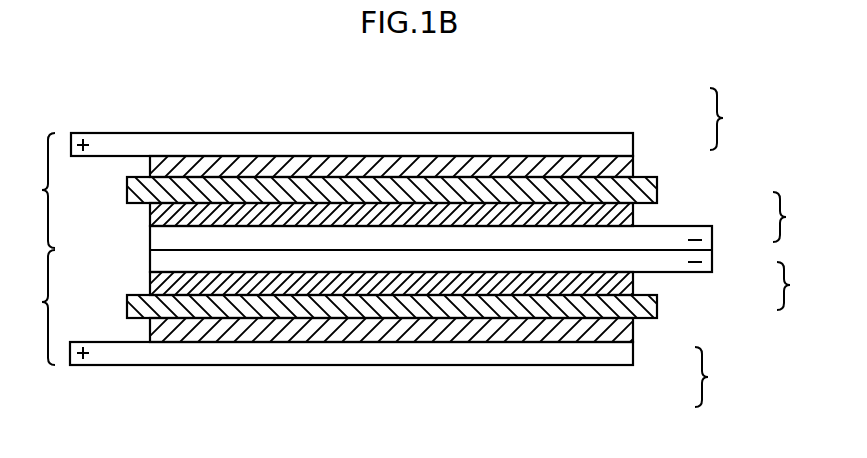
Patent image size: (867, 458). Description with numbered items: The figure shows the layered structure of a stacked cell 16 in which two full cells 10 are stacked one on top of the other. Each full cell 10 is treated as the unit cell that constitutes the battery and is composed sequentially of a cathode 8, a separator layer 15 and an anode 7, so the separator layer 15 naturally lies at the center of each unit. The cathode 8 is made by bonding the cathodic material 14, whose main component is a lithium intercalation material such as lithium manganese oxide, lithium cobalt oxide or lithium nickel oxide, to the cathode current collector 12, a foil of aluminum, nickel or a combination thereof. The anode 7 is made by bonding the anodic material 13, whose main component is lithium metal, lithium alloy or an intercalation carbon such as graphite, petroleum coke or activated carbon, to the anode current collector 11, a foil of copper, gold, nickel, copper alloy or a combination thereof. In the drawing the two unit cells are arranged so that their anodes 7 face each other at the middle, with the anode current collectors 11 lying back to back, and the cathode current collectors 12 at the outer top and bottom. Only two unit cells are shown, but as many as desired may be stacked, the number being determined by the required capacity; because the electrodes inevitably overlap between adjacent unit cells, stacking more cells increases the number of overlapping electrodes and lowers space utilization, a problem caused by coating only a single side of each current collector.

The anode 7 is at (789, 251).
The cathode 8 is at (716, 247).
The full cell 10 is at (33, 249).
The anode current collector 11 is at (703, 243).
The cathode current collector 12 is at (636, 134).
The anodic material 13 is at (633, 211).
The cathodic material 14 is at (628, 167).
The separator layer 15 is at (127, 189).
The stacked cell 16 is at (762, 159).